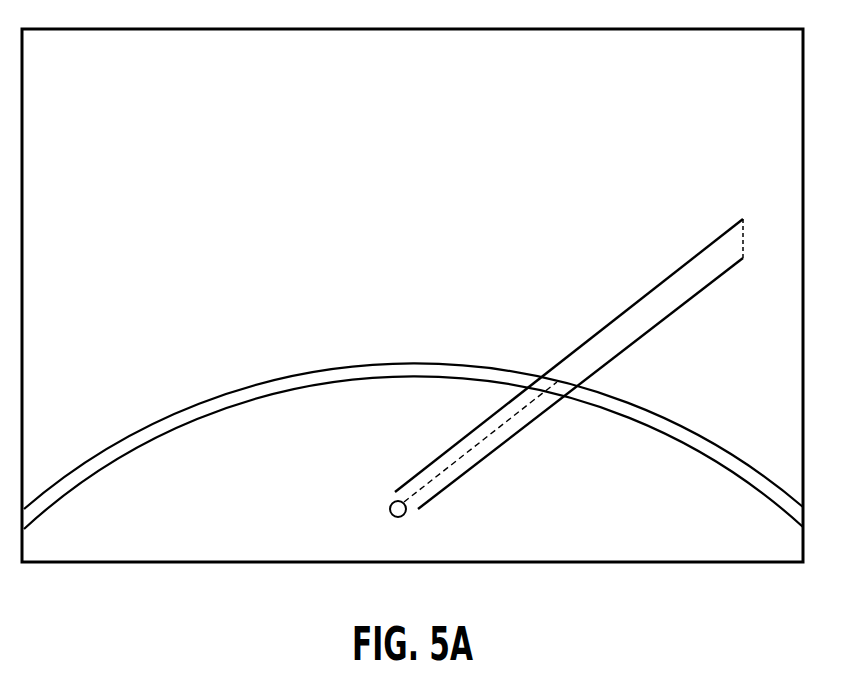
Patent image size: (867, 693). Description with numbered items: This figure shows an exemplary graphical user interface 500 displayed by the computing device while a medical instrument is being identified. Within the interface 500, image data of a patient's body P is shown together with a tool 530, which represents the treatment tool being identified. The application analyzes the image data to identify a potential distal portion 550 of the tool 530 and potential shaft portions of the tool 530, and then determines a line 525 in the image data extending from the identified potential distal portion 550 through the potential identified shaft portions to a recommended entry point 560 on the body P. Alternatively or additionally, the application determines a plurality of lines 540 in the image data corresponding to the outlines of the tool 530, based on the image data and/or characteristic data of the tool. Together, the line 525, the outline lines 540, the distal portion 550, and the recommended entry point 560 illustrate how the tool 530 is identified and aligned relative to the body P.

The imaging view / display frame 500 is at (703, 29).
The patient's body P is at (372, 363).
The tool 530 is at (561, 364).
The plurality of lines 540 is at (459, 441).
The line 525 is at (468, 453).
The recommended entry point 560 is at (557, 381).
The potential distal portion 550 is at (391, 503).